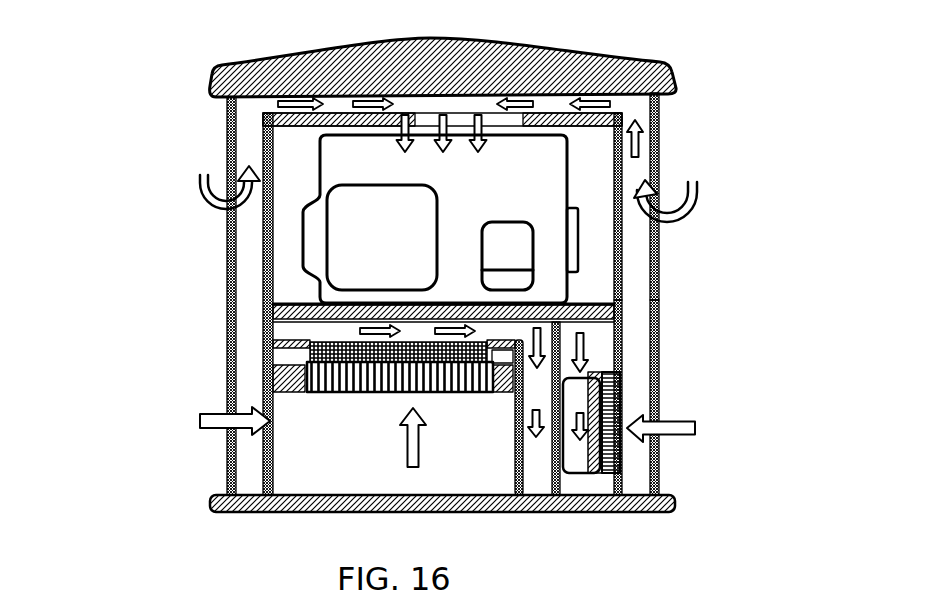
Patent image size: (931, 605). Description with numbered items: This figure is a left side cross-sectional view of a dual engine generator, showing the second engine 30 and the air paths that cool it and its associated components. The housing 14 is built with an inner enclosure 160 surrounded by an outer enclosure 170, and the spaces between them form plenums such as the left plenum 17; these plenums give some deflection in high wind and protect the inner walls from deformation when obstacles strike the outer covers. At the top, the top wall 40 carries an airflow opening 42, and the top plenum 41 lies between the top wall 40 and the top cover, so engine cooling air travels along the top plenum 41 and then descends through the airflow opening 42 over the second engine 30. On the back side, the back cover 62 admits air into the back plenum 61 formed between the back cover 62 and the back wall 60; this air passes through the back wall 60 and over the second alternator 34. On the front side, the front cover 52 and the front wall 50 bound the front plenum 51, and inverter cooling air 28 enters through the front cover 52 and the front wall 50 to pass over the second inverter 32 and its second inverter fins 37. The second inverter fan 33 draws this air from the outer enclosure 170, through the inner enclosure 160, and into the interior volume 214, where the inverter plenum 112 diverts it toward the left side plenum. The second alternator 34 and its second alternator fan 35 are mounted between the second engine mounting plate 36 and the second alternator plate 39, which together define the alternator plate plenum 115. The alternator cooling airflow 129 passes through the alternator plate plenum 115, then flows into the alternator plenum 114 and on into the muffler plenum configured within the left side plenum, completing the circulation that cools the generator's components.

The housing 14 is at (231, 124).
The left plenum 17 is at (677, 94).
The outer enclosure 170 is at (660, 103).
The inner enclosure 160 is at (660, 155).
The interior volume 214 is at (580, 235).
The top wall 40 is at (537, 108).
The top plenum 41 is at (478, 108).
The airflow opening 42 is at (424, 110).
The second engine 30 is at (365, 180).
The back wall 60 is at (267, 243).
The back plenum 61 is at (248, 263).
The back cover 62 is at (228, 298).
The front wall 50 is at (662, 233).
The front plenum 51 is at (628, 281).
The front cover 52 is at (660, 315).
The second inverter 32 is at (630, 373).
The second inverter fan 33 is at (605, 400).
The second engine mounting plate 36 is at (285, 344).
The second alternator 34 is at (312, 350).
The second alternator fan 35 is at (403, 395).
The alternator plate plenum 115 is at (303, 392).
The second alternator plate 39 is at (503, 393).
The alternator cooling airflow 129 is at (217, 422).
The alternator plenum 114 is at (528, 468).
The inverter plenum 112 is at (587, 480).
The second inverter fins 37 is at (605, 465).
The inverter cooling air 28 is at (700, 423).